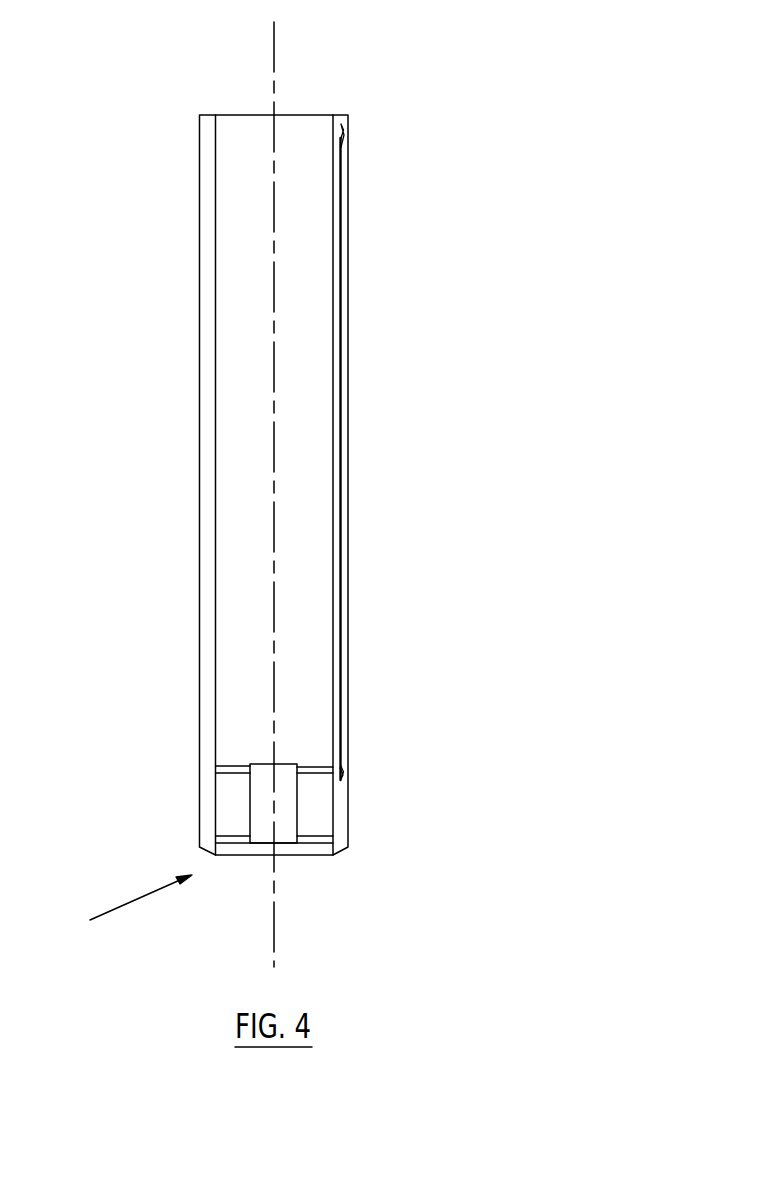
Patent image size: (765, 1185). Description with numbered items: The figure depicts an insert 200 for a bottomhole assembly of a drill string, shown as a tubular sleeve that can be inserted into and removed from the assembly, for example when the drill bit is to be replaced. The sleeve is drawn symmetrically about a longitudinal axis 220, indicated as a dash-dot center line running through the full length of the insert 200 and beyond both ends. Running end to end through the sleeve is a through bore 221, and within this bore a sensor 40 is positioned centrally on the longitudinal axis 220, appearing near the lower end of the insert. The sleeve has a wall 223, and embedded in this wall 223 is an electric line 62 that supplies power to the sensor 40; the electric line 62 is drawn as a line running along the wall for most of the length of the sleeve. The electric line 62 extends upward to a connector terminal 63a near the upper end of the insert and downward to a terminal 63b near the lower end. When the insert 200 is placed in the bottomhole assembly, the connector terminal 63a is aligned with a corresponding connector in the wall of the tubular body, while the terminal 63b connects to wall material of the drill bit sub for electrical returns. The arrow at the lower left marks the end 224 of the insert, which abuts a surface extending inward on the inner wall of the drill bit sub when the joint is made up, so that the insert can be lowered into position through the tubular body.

The longitudinal axis 220 is at (275, 44).
The insert 200 is at (350, 488).
The wall 223 is at (349, 583).
The through bore 221 is at (243, 557).
The electric line 62 is at (340, 260).
The connector terminal 63a is at (350, 143).
The terminal 63b is at (349, 773).
The sensor 40 is at (287, 819).
The end of the insert 224 is at (121, 909).